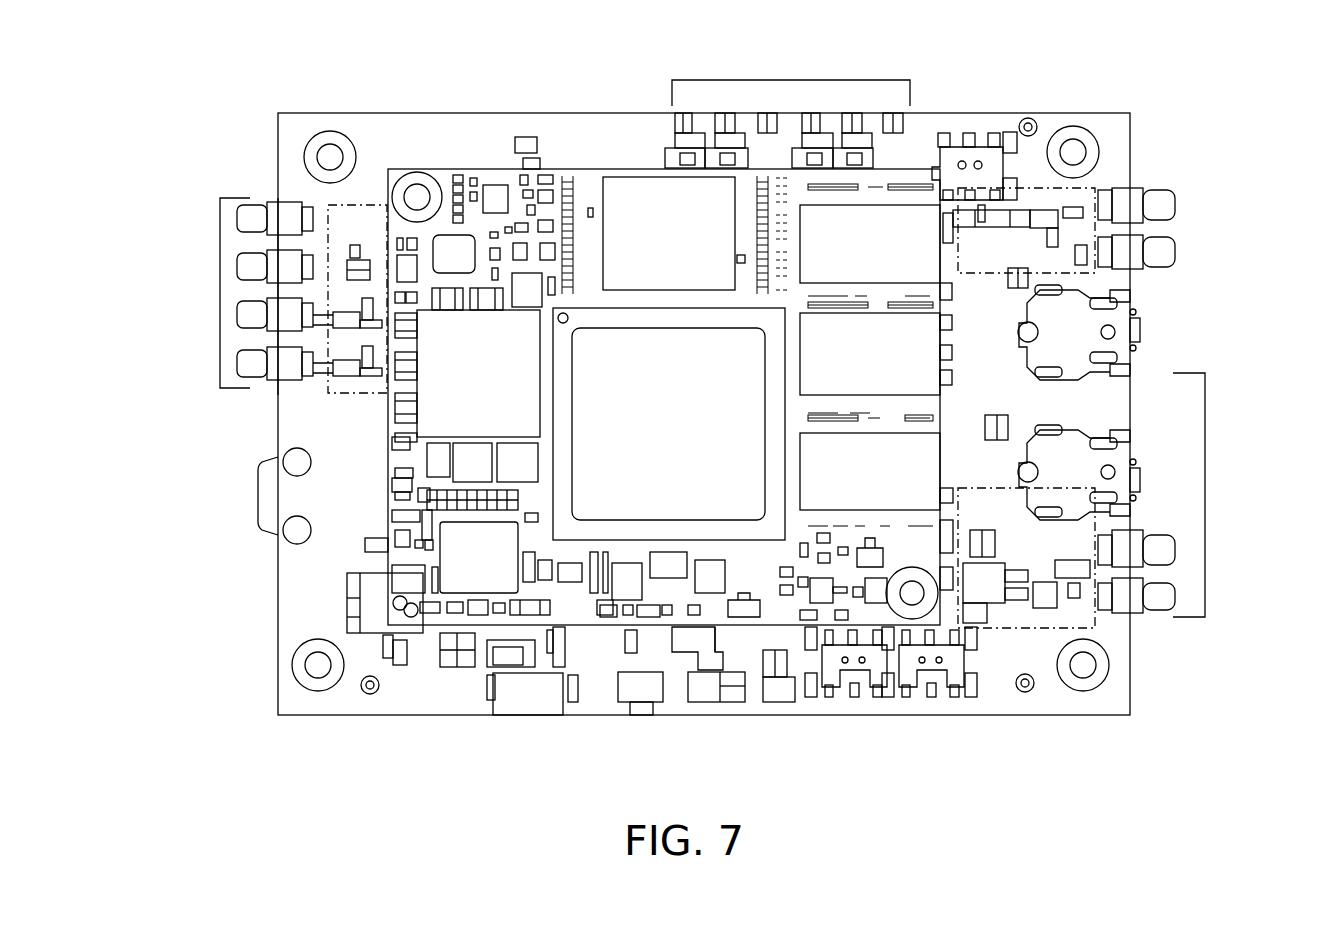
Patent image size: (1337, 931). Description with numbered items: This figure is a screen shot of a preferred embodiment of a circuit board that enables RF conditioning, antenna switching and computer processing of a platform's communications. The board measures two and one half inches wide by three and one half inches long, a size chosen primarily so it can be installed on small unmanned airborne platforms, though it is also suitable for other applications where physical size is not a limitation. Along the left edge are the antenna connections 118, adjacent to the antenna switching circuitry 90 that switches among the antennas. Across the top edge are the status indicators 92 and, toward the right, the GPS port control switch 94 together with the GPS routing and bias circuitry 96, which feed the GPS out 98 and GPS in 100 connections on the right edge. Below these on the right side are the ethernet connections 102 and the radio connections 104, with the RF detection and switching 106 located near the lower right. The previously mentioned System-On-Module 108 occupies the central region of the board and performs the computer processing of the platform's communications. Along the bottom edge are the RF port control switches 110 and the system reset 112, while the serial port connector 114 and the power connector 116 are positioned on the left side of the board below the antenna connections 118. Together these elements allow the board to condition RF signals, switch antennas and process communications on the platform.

The antenna switching circuitry 90 is at (352, 205).
The status indicators 92 is at (801, 70).
The GPS port control switch 94 is at (968, 125).
The GPS routing and bias circuitry 96 is at (1095, 185).
The GPS out 98 is at (1178, 204).
The GPS in 100 is at (1178, 252).
The ethernet connections 102 is at (1150, 470).
The radio connections 104 is at (1218, 537).
The RF detection and switching 106 is at (1105, 628).
The System-On-Module 108 is at (943, 627).
The RF port control switches 110 is at (918, 700).
The system reset 112 is at (642, 718).
The serial port connector 114 is at (255, 587).
The power connector 116 is at (250, 490).
The antenna connections 118 is at (204, 290).